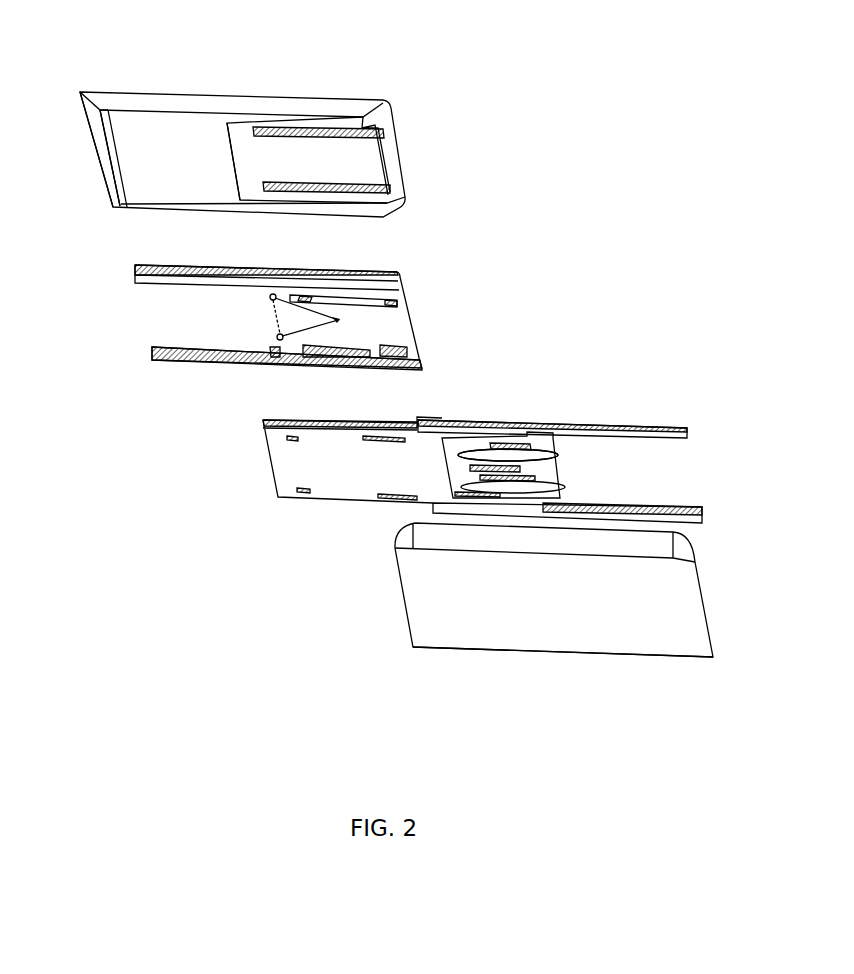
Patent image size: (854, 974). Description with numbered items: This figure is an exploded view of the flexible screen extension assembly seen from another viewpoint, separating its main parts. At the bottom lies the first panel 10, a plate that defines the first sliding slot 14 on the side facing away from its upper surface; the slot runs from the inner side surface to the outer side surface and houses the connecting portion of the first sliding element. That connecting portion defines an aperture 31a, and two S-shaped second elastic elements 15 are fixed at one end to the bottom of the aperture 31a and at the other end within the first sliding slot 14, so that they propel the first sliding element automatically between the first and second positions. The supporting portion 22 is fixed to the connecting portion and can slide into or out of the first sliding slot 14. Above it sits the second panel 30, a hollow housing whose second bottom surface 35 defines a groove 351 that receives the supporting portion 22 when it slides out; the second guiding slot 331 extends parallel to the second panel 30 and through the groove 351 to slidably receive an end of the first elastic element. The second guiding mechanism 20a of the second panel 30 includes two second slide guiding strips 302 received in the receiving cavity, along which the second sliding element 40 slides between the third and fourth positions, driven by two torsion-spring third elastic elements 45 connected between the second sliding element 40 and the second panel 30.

The second panel 30 is at (128, 69).
The second bottom surface 35 is at (153, 197).
The second guiding slot 331 is at (377, 135).
The groove 351 is at (250, 187).
The second guiding mechanism 20a is at (362, 273).
The second slide guiding strips 302 is at (240, 367).
The second sliding element 40 is at (287, 322).
The third elastic element 45 is at (338, 322).
The supporting portion 22 is at (293, 467).
The first sliding slot 14 is at (590, 450).
The aperture 31a is at (468, 442).
The second elastic element 15 is at (527, 467).
The first panel 10 is at (622, 675).